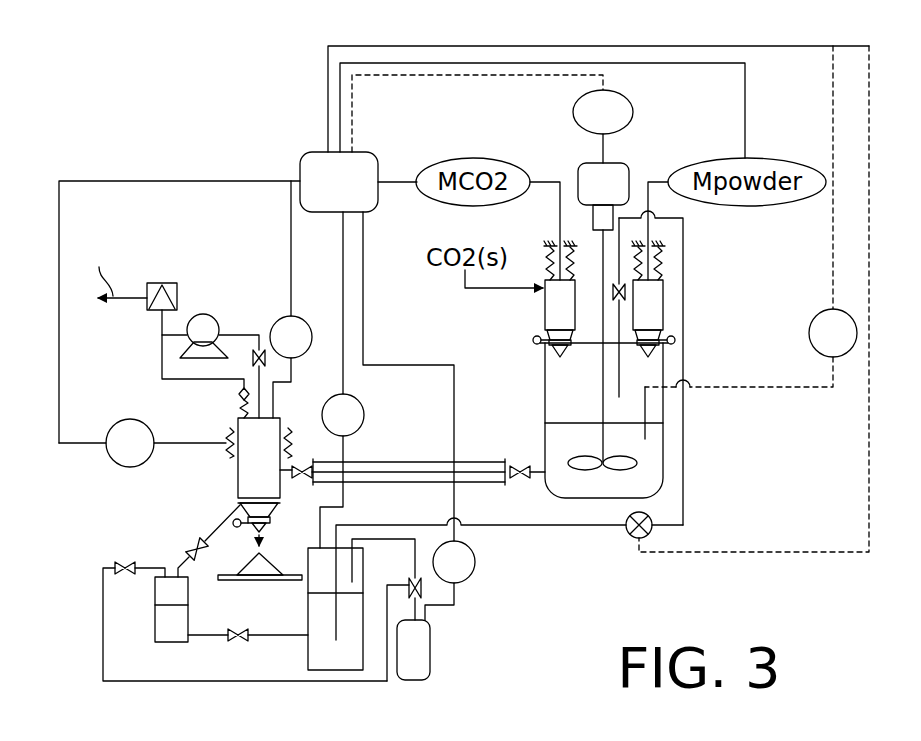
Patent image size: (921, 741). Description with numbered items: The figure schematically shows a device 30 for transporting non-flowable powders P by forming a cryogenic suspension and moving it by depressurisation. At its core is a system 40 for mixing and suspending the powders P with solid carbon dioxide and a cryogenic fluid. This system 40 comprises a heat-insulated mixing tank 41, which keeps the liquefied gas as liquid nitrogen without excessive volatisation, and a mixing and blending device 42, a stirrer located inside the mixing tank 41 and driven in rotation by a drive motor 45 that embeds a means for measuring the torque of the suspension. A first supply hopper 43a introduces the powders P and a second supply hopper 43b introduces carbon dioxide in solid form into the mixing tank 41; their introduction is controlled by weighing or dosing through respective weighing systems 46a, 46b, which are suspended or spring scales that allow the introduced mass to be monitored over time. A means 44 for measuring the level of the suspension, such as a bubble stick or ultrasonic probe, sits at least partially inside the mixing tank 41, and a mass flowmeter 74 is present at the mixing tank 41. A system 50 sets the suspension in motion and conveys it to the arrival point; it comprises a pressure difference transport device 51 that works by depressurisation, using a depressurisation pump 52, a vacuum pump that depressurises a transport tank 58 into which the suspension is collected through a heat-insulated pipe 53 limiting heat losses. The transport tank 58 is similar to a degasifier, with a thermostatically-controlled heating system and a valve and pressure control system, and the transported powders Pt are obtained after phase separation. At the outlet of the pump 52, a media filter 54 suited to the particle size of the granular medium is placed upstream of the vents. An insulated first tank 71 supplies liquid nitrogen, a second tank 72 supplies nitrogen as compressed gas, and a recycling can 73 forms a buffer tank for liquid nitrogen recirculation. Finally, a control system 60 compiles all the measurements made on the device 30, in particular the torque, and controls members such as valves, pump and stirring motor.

The device for transporting non-flowable powders 30 is at (141, 60).
The system for mixing and suspending the powders 40 is at (694, 401).
The mixing tank 41 is at (665, 463).
The mixing and blending device 42 is at (627, 462).
The first supply hopper 43a is at (667, 320).
The second supply hopper 43b is at (543, 312).
The means for measuring the level 44 is at (833, 333).
The drive motor 45 is at (595, 165).
The weighing system 46a is at (660, 265).
The weighing system 46b is at (543, 262).
The system for setting the cryogenic suspension in motion 50 is at (72, 474).
The pressure difference transport device 51 is at (198, 280).
The depressurisation pump 52 is at (209, 320).
The heat-insulated pipe 53 is at (378, 460).
The media filter 54 is at (160, 283).
The transport tank 58 is at (280, 425).
The system for controlling the motion of the cryogenic suspension 60 is at (377, 346).
The first tank 71 is at (307, 655).
The second tank 72 is at (435, 648).
The recycling can 73 is at (155, 623).
The mass flowmeter 74 is at (632, 541).
The powders P is at (672, 295).
The transported powders Pt is at (248, 562).